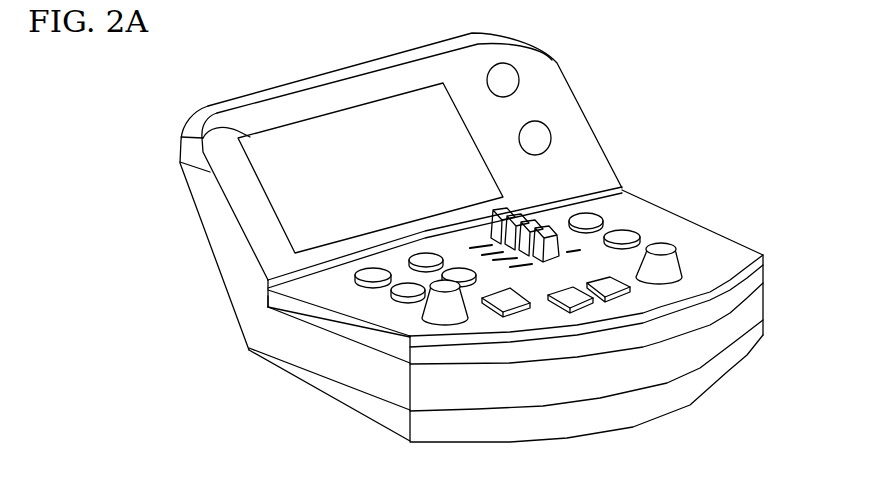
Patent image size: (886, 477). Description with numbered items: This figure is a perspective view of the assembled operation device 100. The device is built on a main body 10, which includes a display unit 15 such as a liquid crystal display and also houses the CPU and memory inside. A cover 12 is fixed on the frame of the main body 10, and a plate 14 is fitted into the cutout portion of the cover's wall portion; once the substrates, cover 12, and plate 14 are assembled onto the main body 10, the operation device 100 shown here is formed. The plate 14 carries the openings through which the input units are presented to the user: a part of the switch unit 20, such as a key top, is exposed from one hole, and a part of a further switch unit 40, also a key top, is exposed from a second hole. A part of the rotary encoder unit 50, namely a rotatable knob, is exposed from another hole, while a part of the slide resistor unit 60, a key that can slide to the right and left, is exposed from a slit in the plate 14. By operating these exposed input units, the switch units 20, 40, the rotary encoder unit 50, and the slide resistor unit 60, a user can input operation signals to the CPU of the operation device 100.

The operation device 100 is at (802, 80).
The main body 10 is at (260, 343).
The cover 12 is at (282, 305).
The plate 14 is at (723, 268).
The display unit 15 is at (181, 137).
The switch unit 20 is at (592, 216).
The switch unit 40 is at (618, 355).
The rotary encoder unit 50 is at (447, 313).
The slide resistor unit 60 is at (510, 210).